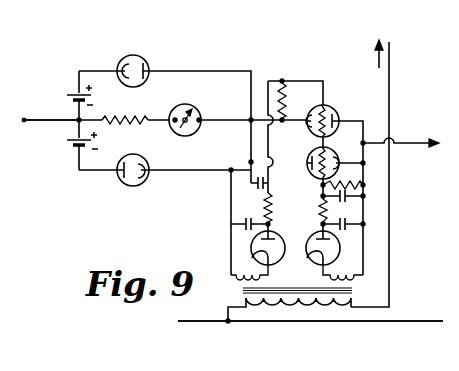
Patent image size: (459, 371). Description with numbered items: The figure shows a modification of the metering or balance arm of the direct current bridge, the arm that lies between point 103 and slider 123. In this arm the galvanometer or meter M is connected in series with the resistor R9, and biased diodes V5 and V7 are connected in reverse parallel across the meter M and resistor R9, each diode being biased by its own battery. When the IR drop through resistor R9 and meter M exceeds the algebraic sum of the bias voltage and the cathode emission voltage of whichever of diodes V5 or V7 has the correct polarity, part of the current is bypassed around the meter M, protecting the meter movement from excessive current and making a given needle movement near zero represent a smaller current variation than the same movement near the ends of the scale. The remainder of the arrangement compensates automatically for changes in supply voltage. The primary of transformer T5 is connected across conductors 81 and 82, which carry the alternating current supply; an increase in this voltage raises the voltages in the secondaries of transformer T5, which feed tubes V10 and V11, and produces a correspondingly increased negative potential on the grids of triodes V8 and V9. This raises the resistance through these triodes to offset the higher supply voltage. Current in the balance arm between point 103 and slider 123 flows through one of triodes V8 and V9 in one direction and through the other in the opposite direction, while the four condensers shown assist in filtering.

The biased diode V5 is at (143, 61).
The biased diode V7 is at (139, 183).
The resistor R9 is at (133, 117).
The meter M is at (198, 133).
The point 103 is at (24, 120).
The triode V8 is at (330, 111).
The triode V9 is at (332, 155).
The tube V10 is at (254, 251).
The tube V11 is at (335, 253).
The transformer T5 is at (243, 289).
The conductor 82 is at (207, 322).
The slider 123 is at (410, 146).
The conductor 81 is at (354, 56).